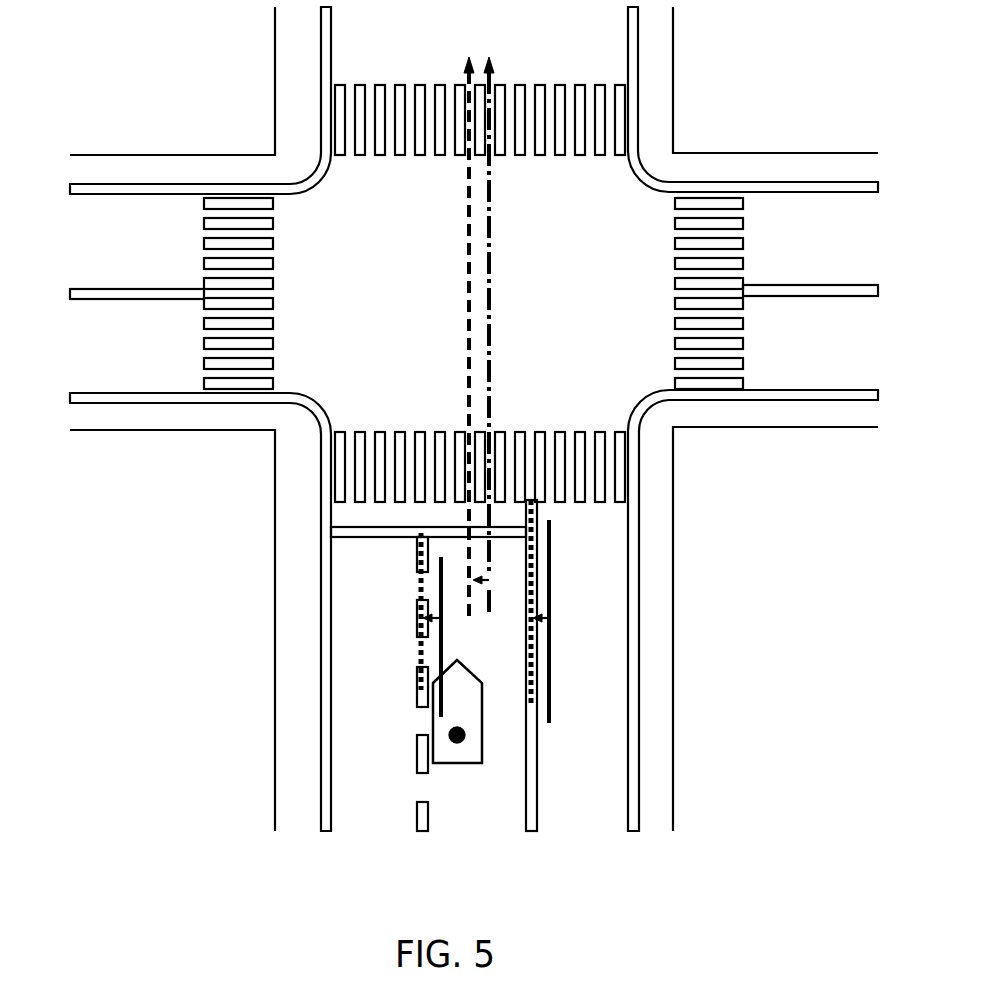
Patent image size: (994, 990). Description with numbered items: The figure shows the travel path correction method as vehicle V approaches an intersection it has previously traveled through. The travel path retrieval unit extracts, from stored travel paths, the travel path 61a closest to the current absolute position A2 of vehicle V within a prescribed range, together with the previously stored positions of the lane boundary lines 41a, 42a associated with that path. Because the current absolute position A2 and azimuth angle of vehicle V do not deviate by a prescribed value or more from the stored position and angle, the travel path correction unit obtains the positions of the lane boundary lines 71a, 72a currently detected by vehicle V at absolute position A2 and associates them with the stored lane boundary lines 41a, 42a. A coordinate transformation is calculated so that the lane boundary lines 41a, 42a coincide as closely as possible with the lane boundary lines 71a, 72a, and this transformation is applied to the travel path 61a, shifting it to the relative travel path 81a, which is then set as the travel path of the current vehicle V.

The relative travel path 81a is at (468, 255).
The travel path 61a is at (491, 300).
The lane boundary line 71a is at (419, 553).
The lane boundary line 72a is at (533, 547).
The lane boundary line 41a is at (440, 650).
The lane boundary line 42a is at (551, 590).
The vehicle V is at (433, 720).
The current absolute position A2 is at (457, 744).